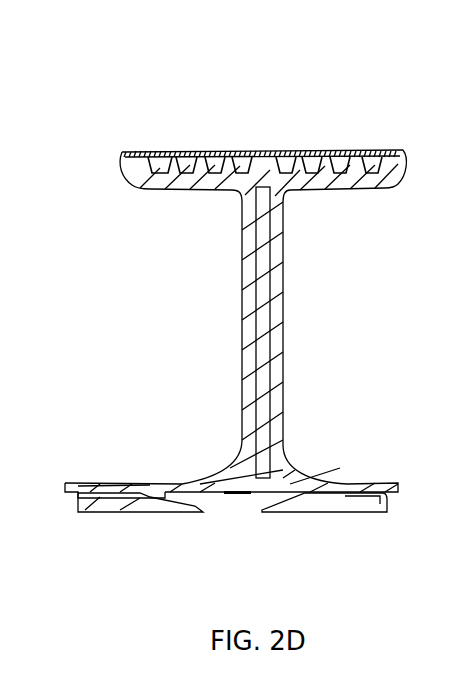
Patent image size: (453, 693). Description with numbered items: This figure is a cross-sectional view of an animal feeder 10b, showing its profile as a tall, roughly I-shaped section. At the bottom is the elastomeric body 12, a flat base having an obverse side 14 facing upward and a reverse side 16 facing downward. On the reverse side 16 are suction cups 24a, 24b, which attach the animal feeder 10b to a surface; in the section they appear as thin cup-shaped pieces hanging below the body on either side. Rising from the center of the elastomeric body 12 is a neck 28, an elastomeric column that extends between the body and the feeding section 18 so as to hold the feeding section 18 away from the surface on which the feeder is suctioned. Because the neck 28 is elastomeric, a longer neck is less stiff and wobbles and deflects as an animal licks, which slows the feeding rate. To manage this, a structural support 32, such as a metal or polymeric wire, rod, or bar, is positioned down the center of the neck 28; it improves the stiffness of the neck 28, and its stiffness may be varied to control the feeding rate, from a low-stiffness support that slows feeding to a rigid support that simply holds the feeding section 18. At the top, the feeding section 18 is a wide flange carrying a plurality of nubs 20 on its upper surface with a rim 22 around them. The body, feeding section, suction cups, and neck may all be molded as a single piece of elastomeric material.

The animal feeder 10b is at (78, 92).
The nubs 20 is at (230, 160).
The rim 22 is at (127, 157).
The feeding section 18 is at (401, 203).
The neck 28 is at (216, 283).
The structural support 32 is at (270, 334).
The elastomeric body 12 is at (353, 460).
The obverse side 14 is at (170, 482).
The reverse side 16 is at (238, 504).
The suction cup 24a is at (136, 512).
The suction cup 24b is at (348, 508).